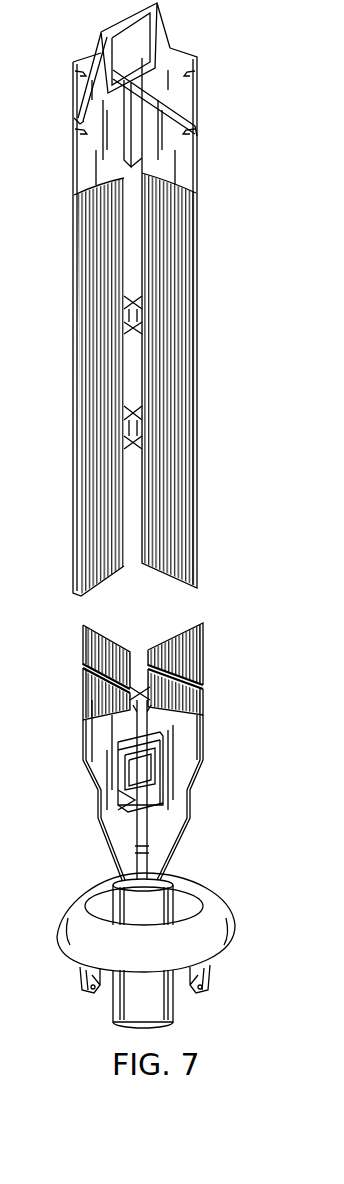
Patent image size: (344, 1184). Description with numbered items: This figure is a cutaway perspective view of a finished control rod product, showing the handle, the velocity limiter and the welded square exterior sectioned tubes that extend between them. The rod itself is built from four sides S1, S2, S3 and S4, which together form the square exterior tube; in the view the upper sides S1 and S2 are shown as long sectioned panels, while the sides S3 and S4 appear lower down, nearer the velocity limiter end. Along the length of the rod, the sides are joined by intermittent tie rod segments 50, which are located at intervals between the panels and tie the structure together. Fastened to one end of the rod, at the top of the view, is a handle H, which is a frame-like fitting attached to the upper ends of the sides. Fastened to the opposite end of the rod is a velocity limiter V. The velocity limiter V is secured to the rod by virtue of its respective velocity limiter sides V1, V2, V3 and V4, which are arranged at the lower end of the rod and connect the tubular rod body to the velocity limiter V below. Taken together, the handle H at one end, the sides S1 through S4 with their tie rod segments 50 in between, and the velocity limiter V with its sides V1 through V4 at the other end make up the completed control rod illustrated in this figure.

The handle H is at (197, 53).
The tie rod segment 50 is at (141, 318).
The side S1 is at (97, 418).
The side S2 is at (172, 376).
The side S3 is at (86, 643).
The side S4 is at (181, 640).
The velocity limiter side V1 is at (98, 730).
The velocity limiter side V2 is at (185, 745).
The velocity limiter side V3 is at (95, 668).
The velocity limiter side V4 is at (200, 672).
The velocity limiter V is at (230, 920).